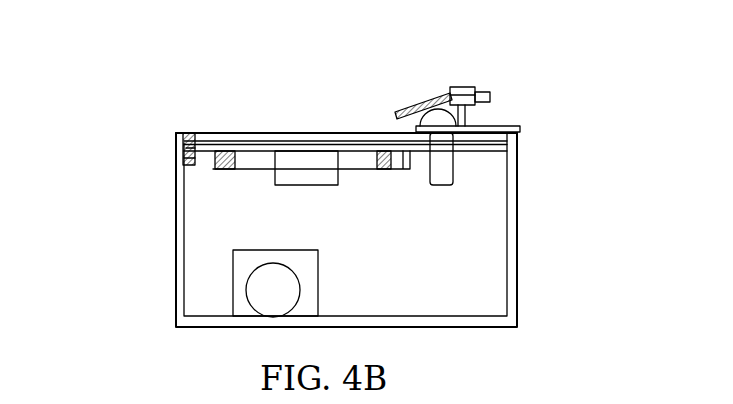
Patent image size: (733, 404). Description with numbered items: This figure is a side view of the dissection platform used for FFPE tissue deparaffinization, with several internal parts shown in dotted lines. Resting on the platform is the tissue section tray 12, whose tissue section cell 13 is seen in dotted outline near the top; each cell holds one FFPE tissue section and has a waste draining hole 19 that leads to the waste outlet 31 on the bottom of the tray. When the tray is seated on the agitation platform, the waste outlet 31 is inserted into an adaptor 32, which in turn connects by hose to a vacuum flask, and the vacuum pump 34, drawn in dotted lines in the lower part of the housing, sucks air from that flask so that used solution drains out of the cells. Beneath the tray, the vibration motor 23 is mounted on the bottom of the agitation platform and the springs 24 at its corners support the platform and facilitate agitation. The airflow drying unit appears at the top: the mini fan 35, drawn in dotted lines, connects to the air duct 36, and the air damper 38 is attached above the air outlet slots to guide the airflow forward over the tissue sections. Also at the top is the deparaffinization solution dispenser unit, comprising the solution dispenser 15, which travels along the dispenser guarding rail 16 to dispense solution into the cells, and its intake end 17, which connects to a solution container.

The tissue section tray 12 is at (412, 144).
The tissue section cell 13 is at (237, 134).
The solution dispenser 15 is at (457, 86).
The dispenser guarding rail 16 is at (465, 117).
The intake end 17 is at (488, 92).
The waste draining hole 19 is at (188, 134).
The vibration motor 23 is at (298, 183).
The spring 24 is at (228, 166).
The waste outlet 31 is at (184, 159).
The adaptor 32 is at (193, 150).
The vacuum pump 34 is at (243, 273).
The mini fan 35 is at (447, 160).
The air duct 36 is at (438, 117).
The air damper 38 is at (412, 122).